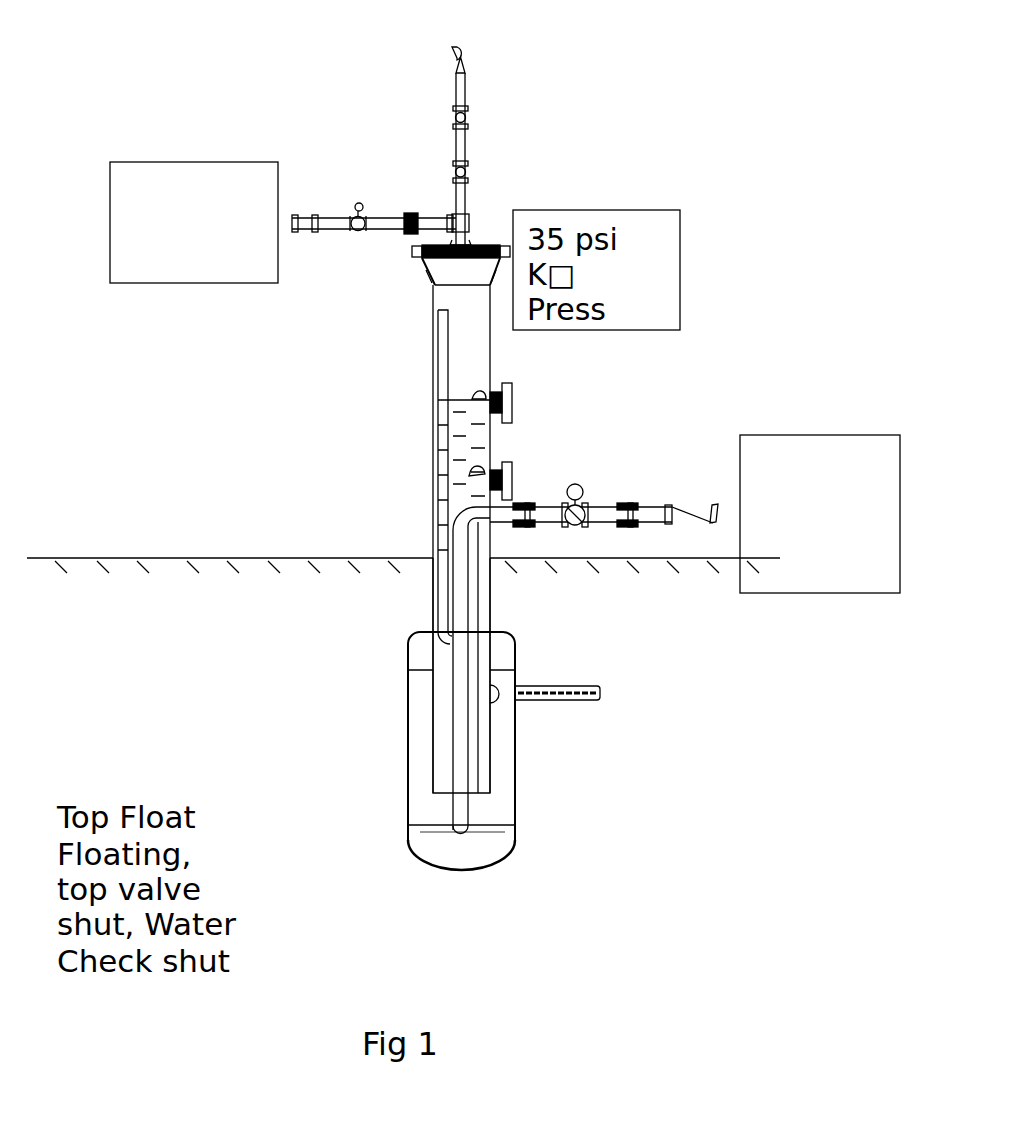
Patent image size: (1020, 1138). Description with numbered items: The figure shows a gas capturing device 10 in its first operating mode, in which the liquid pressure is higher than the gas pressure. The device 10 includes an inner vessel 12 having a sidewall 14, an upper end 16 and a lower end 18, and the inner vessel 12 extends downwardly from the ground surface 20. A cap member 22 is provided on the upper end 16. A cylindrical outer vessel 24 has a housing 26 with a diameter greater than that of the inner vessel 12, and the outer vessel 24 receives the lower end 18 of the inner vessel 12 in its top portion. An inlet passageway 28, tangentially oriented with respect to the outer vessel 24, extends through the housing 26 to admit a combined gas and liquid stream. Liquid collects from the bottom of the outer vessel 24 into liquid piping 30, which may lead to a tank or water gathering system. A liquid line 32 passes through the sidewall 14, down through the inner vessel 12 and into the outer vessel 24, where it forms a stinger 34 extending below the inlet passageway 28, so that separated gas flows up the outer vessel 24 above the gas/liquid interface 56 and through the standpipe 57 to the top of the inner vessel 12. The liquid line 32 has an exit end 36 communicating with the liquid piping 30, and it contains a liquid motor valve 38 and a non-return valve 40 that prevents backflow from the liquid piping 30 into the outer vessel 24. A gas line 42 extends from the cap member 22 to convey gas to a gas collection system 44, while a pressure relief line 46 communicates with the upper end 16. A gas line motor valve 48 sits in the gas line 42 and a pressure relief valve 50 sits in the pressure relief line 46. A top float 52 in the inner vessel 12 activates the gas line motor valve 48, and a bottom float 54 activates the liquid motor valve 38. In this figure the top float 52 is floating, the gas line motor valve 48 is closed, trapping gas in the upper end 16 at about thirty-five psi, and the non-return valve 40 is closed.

The gas capturing device 10 is at (123, 134).
The inner vessel 12 is at (430, 575).
The sidewall 14 is at (433, 455).
The upper end 16 is at (427, 290).
The lower end 18 is at (493, 755).
The ground surface 20 is at (98, 556).
The cap member 22 is at (492, 240).
The outer vessel 24 is at (489, 868).
The housing 26 is at (518, 805).
The inlet passageway 28 is at (563, 703).
The liquid piping 30 is at (818, 597).
The liquid line 32 is at (451, 680).
The stinger 34 is at (448, 835).
The exit end 36 is at (712, 532).
The liquid motor valve 38 is at (573, 532).
The non-return valve 40 is at (697, 505).
The gas line 42 is at (387, 232).
The gas collection system 44 is at (197, 160).
The pressure relief line 46 is at (472, 90).
The gas line motor valve 48 is at (362, 202).
The pressure relief valve 50 is at (472, 53).
The top float 52 is at (513, 405).
The bottom float 54 is at (525, 478).
The gas/liquid interface 56 is at (467, 396).
The standpipe 57 is at (438, 345).